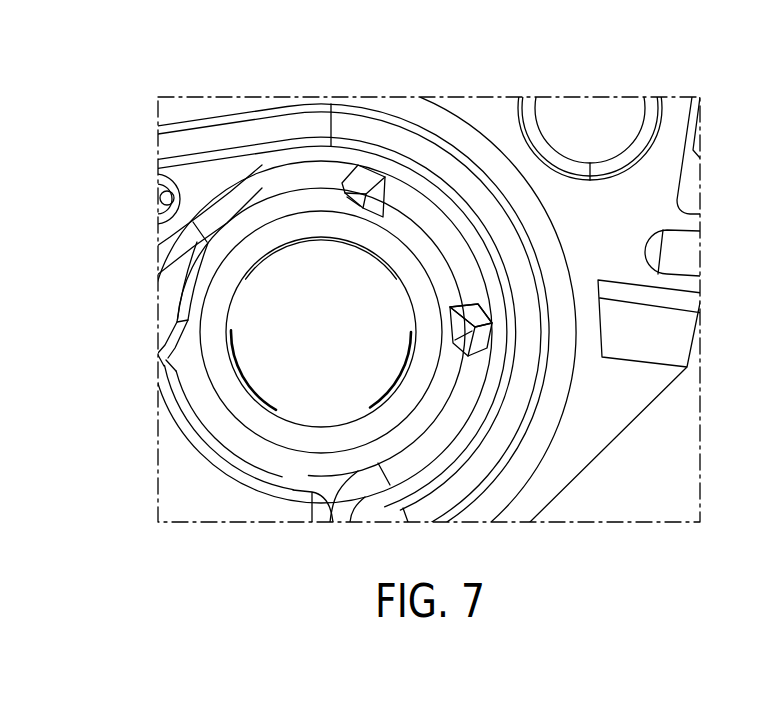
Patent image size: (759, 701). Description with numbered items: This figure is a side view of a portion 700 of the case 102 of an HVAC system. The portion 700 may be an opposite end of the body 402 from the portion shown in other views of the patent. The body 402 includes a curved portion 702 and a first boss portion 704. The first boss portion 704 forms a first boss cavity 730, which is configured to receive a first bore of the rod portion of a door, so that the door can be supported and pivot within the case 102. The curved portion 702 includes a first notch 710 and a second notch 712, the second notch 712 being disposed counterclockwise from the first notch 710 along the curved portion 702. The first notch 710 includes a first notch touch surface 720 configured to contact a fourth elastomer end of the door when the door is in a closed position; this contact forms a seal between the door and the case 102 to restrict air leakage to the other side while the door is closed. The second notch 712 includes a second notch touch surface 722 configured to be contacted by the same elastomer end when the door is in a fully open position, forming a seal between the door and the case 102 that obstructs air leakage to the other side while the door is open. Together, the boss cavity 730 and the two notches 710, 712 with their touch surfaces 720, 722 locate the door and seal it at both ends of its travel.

The portion 700 is at (152, 128).
The body 402 is at (208, 106).
The first boss portion 704 is at (268, 212).
The second notch 712 is at (364, 163).
The second notch touch surface 722 is at (383, 191).
The case 102 is at (488, 105).
The curved portion 702 is at (505, 200).
The first notch touch surface 720 is at (473, 309).
The first notch 710 is at (497, 333).
The first boss cavity 730 is at (252, 312).